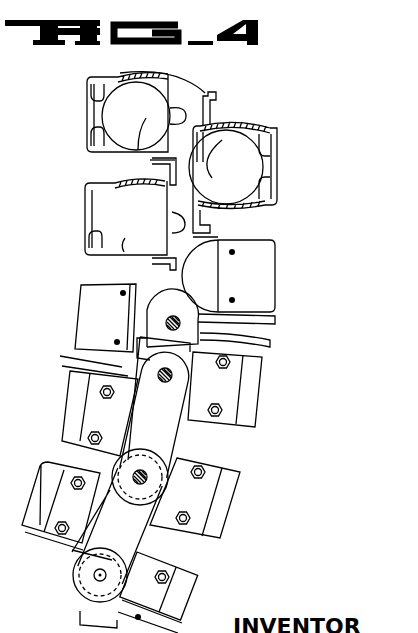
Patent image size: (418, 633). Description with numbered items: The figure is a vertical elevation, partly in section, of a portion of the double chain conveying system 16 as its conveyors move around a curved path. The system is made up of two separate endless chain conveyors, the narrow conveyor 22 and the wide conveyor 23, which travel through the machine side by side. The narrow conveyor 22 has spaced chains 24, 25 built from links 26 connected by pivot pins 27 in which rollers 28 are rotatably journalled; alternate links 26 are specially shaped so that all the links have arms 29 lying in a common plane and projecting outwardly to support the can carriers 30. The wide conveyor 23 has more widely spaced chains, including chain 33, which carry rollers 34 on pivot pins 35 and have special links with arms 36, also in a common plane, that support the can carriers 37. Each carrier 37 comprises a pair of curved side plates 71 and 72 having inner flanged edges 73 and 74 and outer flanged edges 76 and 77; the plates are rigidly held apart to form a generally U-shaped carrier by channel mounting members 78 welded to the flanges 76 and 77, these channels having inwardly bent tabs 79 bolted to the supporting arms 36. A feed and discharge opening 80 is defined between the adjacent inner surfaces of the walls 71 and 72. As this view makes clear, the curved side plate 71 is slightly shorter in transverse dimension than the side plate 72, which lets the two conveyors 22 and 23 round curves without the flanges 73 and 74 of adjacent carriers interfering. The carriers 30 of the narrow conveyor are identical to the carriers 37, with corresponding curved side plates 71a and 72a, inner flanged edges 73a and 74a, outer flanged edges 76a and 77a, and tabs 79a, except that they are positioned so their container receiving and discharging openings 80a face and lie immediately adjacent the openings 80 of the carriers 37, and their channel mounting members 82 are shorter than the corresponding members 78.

The double chain conveying system 16 is at (278, 90).
The narrow conveyor 22 is at (247, 126).
The wide conveyor 23 is at (118, 76).
The chain 24 is at (212, 83).
The chain 25 is at (201, 324).
The link 26 is at (173, 190).
The pivot pin 27 is at (178, 222).
The roller 28 is at (211, 100).
The arm 29 is at (237, 378).
The can carrier 30 is at (278, 268).
The chain 33 is at (70, 557).
The roller 34 is at (140, 455).
The pivot pin 35 is at (163, 383).
The arm 36 is at (85, 425).
The can carrier 37 is at (83, 186).
The curved side plate 71 is at (150, 75).
The curved side plate 71a is at (252, 128).
The curved side plate 72 is at (137, 122).
The curved side plate 72a is at (238, 208).
The inner flanged edge 73 is at (166, 72).
The inner flanged edge 73a is at (208, 118).
The inner flanged edge 74 is at (152, 161).
The inner flanged edge 74a is at (205, 217).
The outer flanged edge 76 is at (92, 90).
The outer flanged edge 76a is at (277, 143).
The outer flanged edge 77 is at (130, 118).
The outer flanged edge 77a is at (282, 188).
The channel mounting member 78 is at (88, 105).
The inwardly bent tab 79 is at (95, 117).
The inwardly bent tab 79a is at (258, 285).
The feed and discharge opening 80 is at (152, 110).
The container receiving and discharging opening 80a is at (226, 167).
The channel mounting member 82 is at (280, 158).